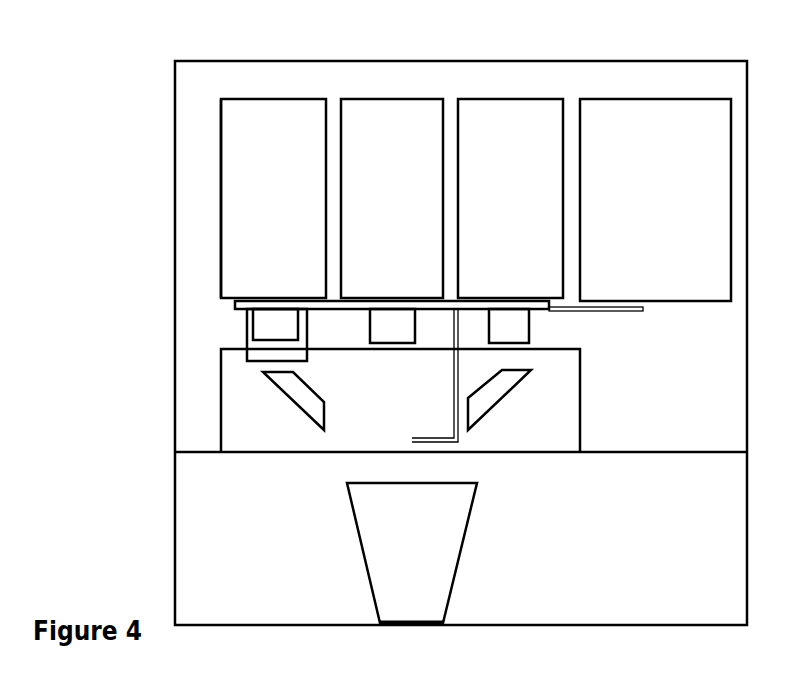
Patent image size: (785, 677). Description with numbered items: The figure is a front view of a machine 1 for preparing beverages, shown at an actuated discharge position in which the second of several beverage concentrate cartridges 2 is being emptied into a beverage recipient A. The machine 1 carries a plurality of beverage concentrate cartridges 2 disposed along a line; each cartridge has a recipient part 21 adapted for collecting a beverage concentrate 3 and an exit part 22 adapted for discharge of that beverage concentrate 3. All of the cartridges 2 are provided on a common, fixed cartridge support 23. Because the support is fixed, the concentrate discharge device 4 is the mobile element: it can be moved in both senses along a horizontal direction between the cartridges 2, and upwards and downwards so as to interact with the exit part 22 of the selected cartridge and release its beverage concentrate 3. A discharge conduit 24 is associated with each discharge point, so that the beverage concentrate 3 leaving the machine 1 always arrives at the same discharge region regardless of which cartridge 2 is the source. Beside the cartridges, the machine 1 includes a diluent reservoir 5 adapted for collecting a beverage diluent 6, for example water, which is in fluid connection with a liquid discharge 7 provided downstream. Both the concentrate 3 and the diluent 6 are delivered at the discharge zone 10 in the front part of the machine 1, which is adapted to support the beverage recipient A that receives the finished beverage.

The machine for preparing beverages 1 is at (399, 328).
The beverage concentrate cartridge 2 is at (392, 185).
The beverage concentrate 3 is at (273, 198).
The concentrate discharge device 4 is at (292, 347).
The diluent reservoir 5 is at (655, 187).
The beverage diluent 6 is at (655, 200).
The liquid discharge 7 is at (527, 374).
The discharge zone 10 is at (400, 400).
The recipient part 21 is at (198, 198).
The exit part 22 is at (370, 320).
The cartridge support 23 is at (391, 326).
The discharge conduit 24 is at (396, 406).
The beverage recipient A is at (412, 553).